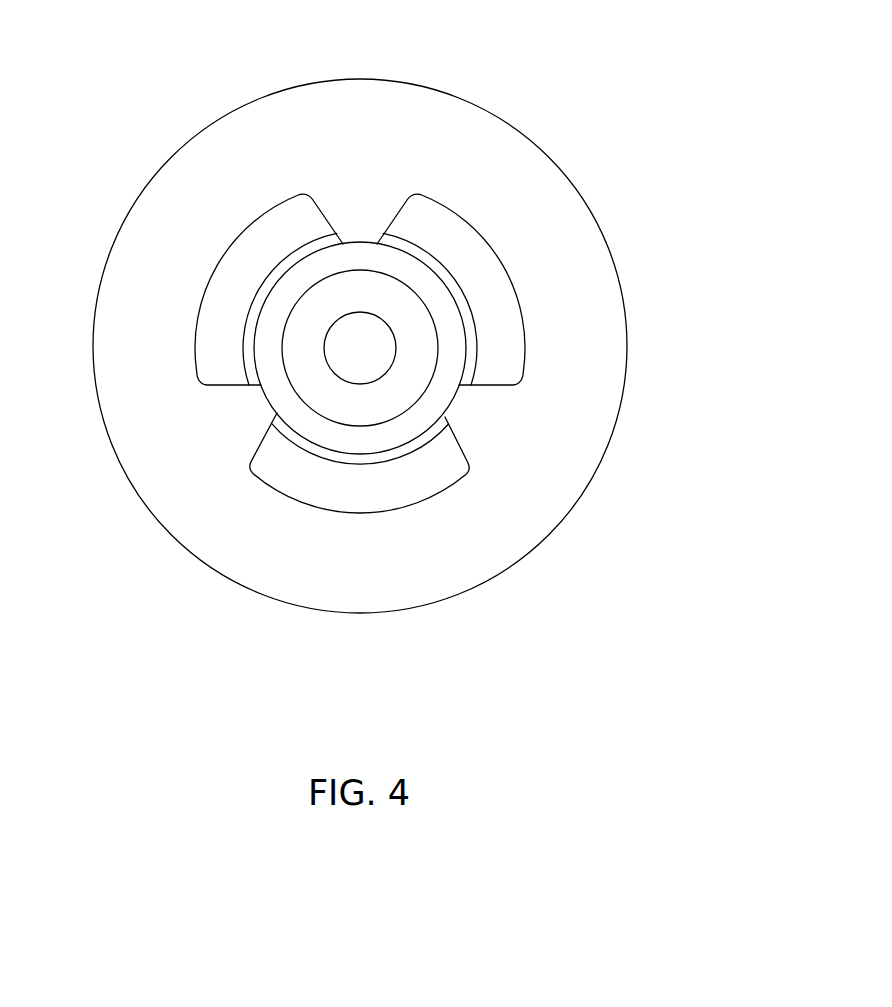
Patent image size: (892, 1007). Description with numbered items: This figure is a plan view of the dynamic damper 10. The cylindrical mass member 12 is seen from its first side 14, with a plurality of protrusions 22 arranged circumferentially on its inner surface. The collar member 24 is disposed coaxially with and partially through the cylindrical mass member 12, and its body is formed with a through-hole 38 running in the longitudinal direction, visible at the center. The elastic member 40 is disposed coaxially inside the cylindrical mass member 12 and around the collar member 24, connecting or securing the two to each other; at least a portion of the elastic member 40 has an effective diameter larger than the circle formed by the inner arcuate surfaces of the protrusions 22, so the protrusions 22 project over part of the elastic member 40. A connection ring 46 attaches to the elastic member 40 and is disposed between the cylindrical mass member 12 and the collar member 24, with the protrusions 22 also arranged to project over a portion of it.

The dynamic damper 10 is at (604, 105).
The cylindrical mass member 12 is at (592, 212).
The first side 14 is at (573, 262).
The protrusions 22 is at (360, 232).
The collar member 24 is at (408, 313).
The through-hole 38 is at (353, 340).
The elastic member 40 is at (470, 357).
The connection ring 46 is at (367, 485).